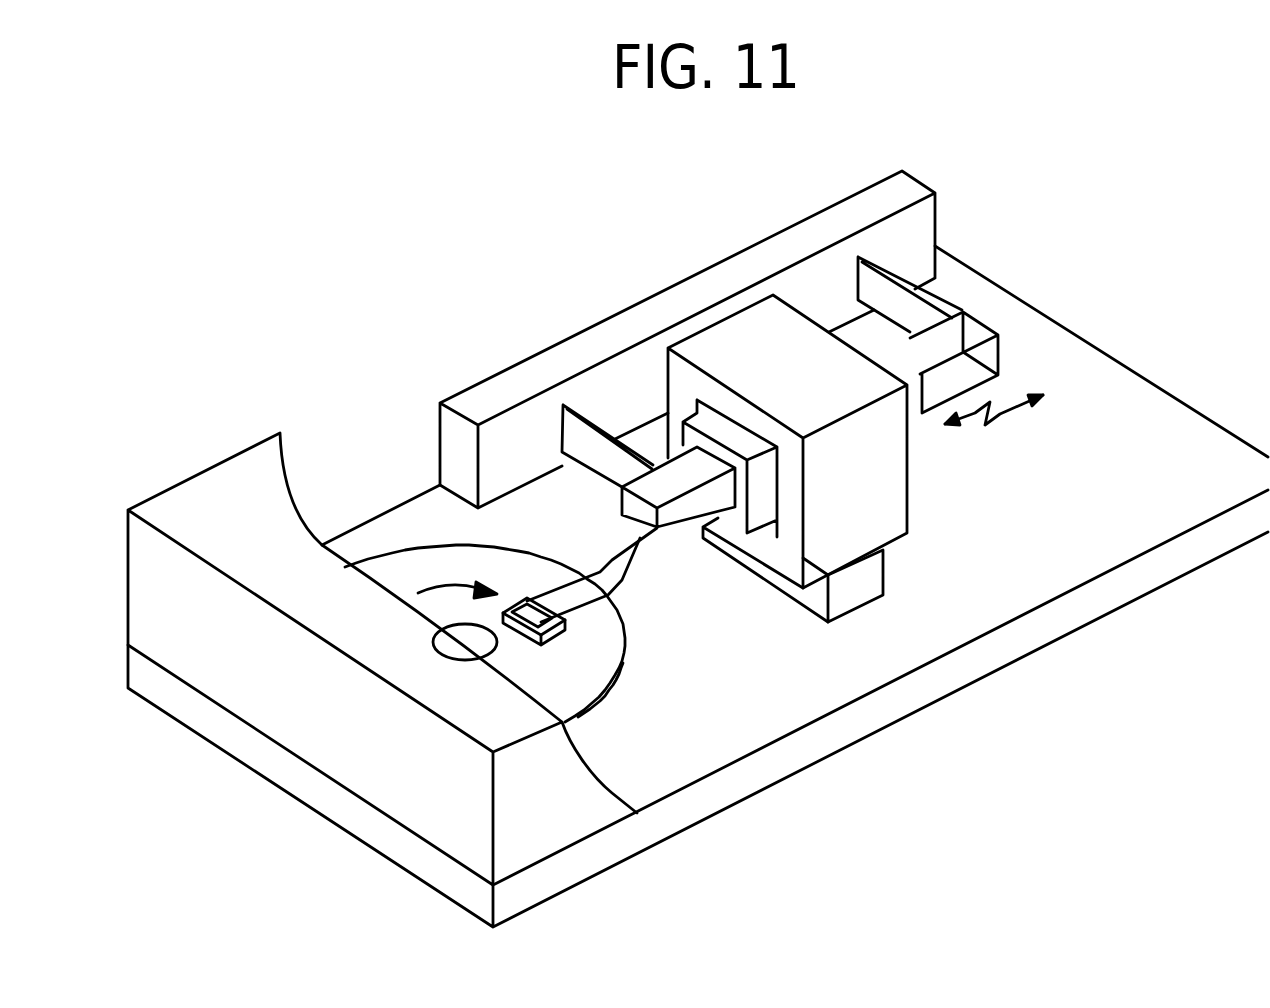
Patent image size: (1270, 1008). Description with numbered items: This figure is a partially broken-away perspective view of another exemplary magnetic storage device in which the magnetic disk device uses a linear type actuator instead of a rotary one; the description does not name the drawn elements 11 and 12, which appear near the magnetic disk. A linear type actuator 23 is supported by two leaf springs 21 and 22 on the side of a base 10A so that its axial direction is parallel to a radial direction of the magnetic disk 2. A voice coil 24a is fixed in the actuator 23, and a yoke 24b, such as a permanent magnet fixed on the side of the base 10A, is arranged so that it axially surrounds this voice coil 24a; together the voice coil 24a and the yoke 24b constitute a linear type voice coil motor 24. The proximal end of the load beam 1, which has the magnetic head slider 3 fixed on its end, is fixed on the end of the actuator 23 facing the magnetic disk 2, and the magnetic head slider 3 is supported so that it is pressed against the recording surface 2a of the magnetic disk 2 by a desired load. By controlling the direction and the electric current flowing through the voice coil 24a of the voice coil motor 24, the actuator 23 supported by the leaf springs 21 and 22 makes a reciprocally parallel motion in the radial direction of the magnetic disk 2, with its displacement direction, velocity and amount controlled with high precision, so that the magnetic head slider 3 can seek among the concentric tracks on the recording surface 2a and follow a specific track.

The load beam 1 is at (610, 567).
The magnetic disk 2 is at (481, 521).
The recording surface 2a is at (465, 568).
The magnetic head slider 3 is at (552, 638).
The base 10A is at (1130, 398).
The spindle support block 11 is at (215, 487).
The spindle 12 is at (457, 623).
The leaf spring 21 is at (583, 440).
The leaf spring 22 is at (870, 287).
The linear type actuator 23 is at (670, 477).
The linear type voice coil motor 24 is at (840, 592).
The voice coil 24a is at (757, 505).
The yoke 24b is at (780, 483).